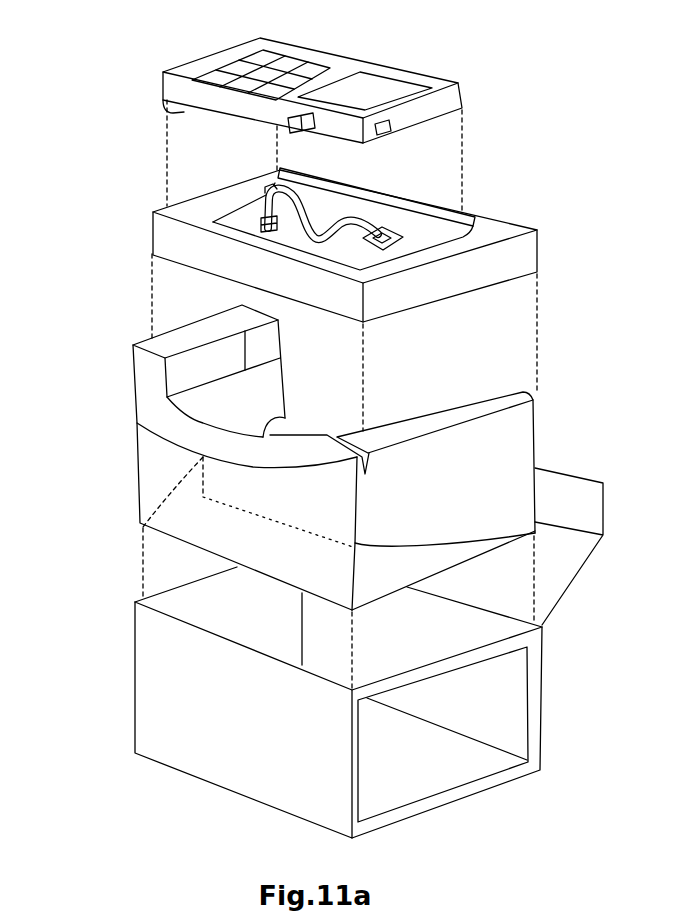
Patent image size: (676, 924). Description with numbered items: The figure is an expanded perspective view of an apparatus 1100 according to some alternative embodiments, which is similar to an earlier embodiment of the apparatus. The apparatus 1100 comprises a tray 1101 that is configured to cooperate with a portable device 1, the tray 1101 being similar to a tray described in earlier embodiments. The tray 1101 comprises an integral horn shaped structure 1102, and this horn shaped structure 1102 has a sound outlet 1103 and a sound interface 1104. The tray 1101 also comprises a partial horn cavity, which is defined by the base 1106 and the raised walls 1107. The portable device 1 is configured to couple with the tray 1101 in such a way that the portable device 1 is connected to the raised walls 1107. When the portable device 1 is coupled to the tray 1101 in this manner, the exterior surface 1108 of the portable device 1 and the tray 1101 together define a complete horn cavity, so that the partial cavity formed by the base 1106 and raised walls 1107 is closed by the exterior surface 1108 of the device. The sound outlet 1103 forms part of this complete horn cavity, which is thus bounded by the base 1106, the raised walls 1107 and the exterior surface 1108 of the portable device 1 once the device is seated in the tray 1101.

The portable device 1 is at (183, 65).
The apparatus 1100 is at (80, 242).
The tray 1101 is at (420, 303).
The horn shaped structure 1102 is at (215, 222).
The sound outlet 1103 is at (250, 203).
The sound interface 1104 is at (393, 230).
The base 1106 is at (238, 217).
The raised walls 1107 is at (270, 183).
The exterior surface 1108 is at (163, 107).